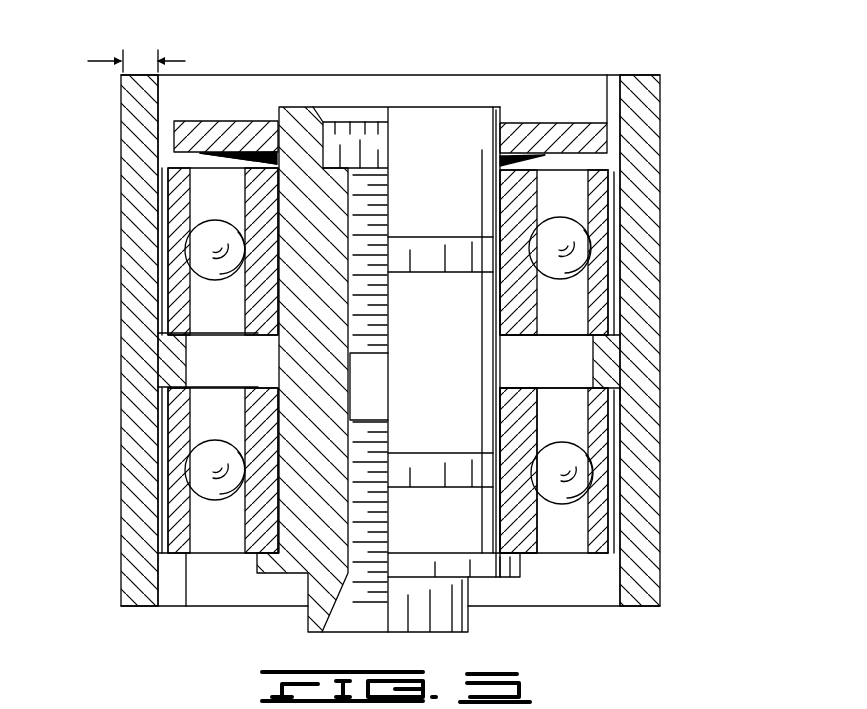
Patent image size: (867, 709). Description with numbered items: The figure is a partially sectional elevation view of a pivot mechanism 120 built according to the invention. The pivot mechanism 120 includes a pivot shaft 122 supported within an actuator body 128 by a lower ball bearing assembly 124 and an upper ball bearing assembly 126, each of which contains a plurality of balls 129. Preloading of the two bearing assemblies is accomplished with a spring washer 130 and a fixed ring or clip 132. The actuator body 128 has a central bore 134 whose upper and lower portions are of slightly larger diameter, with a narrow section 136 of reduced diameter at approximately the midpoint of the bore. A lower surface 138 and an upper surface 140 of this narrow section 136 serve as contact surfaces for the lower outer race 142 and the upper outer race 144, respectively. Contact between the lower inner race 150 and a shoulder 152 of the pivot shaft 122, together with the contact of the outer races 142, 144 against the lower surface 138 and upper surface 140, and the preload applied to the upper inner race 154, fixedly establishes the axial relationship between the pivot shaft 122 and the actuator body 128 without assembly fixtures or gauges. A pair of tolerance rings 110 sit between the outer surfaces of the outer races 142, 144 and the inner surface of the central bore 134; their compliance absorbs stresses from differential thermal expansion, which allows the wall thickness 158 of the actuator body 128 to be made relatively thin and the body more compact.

The tolerance rings 110 is at (615, 228).
The pivot mechanism 120 is at (658, 57).
The pivot shaft 122 is at (452, 128).
The lower ball bearing assembly 124 is at (193, 558).
The upper ball bearing assembly 126 is at (201, 160).
The actuator body 128 is at (140, 157).
The balls 129 is at (205, 262).
The spring washer 130 is at (262, 156).
The fixed ring or clip 132 is at (223, 136).
The central bore 134 is at (557, 102).
The narrow section 136 is at (600, 365).
The lower surface 138 is at (620, 412).
The upper surface 140 is at (620, 296).
The lower outer race 142 is at (600, 530).
The upper outer race 144 is at (600, 187).
The lower inner race 150 is at (522, 534).
The shoulder 152 is at (490, 550).
The upper inner race 154 is at (515, 190).
The wall thickness 158 is at (112, 63).